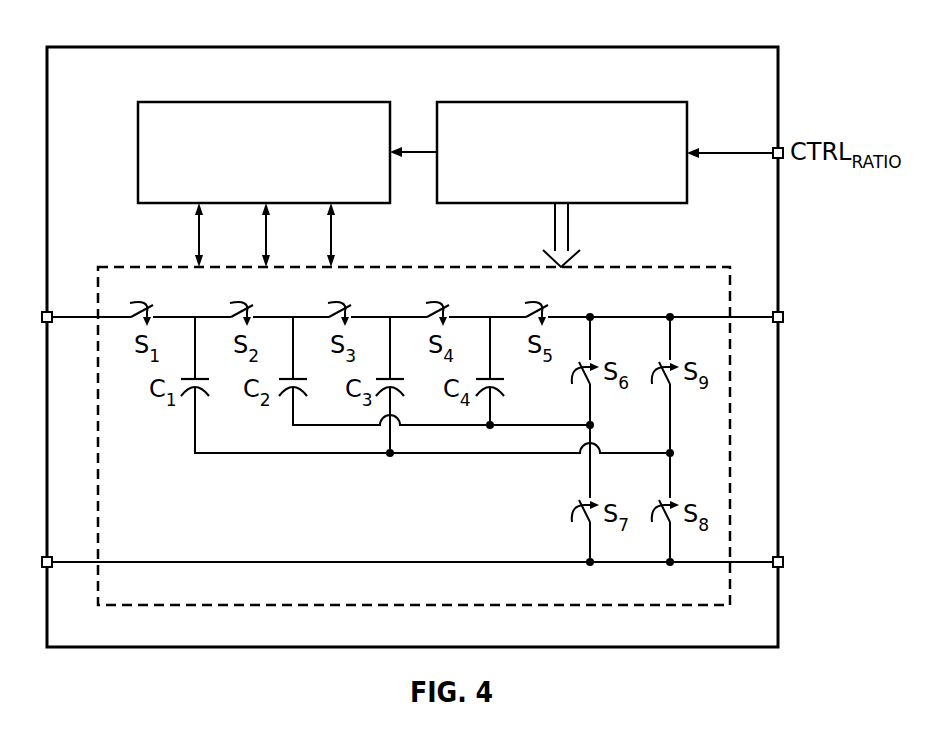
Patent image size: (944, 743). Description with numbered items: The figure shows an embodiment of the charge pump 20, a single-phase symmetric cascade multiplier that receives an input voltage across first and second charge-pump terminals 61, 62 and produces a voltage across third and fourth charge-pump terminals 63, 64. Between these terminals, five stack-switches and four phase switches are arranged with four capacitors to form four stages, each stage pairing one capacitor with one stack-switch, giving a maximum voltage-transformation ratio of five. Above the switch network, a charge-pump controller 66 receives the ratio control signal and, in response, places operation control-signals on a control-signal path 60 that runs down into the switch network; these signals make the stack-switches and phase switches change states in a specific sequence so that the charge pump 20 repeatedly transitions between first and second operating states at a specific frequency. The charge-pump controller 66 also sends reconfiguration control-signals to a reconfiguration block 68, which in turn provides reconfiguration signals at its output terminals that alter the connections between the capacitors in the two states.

The charge pump 20 is at (102, 46).
The reconfiguration block 68 is at (195, 101).
The charge-pump controller 66 is at (493, 101).
The control-signal path 60 is at (569, 219).
The first charge-pump terminal 61 is at (29, 316).
The second charge-pump terminal 62 is at (29, 562).
The third charge-pump terminal 63 is at (799, 316).
The fourth charge-pump terminal 64 is at (799, 562).